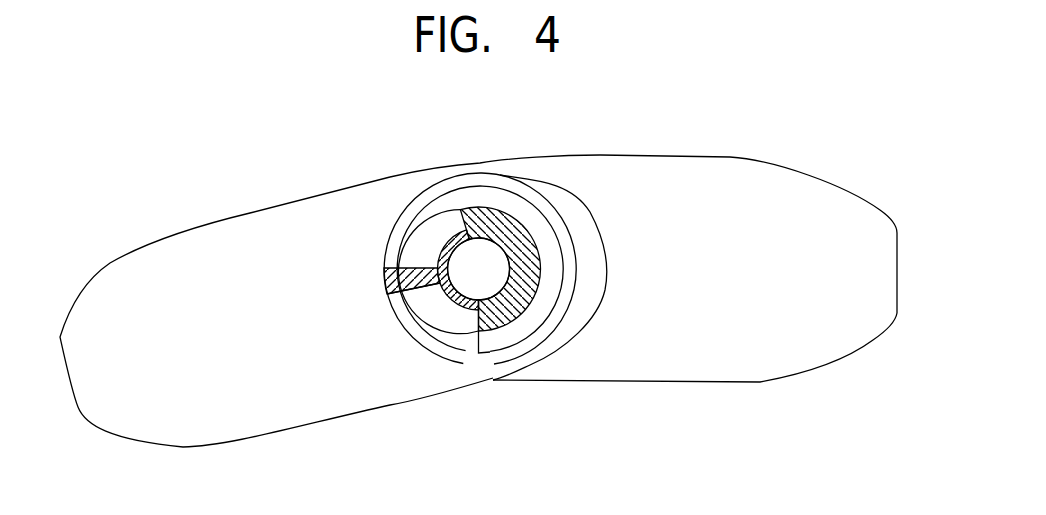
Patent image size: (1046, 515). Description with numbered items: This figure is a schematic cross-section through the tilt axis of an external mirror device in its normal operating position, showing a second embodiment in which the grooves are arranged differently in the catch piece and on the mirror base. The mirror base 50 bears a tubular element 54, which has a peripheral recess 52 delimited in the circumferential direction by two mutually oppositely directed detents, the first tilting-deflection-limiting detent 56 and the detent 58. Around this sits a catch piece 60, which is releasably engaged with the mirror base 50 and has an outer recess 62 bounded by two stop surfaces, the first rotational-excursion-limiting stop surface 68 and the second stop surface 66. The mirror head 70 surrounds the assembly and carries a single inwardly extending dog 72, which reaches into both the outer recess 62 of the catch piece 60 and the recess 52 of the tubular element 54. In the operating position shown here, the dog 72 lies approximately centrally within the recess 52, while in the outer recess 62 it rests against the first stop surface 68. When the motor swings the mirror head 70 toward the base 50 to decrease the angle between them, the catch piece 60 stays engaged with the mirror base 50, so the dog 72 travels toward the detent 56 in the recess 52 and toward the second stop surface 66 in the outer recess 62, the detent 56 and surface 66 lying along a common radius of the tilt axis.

The mirror base 50 is at (730, 178).
The mirror head 70 is at (165, 270).
The tubular element 54 is at (507, 215).
The peripheral recess 52 is at (432, 358).
The first tilting-deflection-limiting detent 56 is at (465, 322).
The detent 58 is at (463, 216).
The catch piece 60 is at (548, 243).
The outer recess 62 is at (412, 317).
The second stop surface 66 is at (478, 345).
The first rotational-excursion-limiting stop surface 68 is at (386, 278).
The dog 72 is at (397, 295).